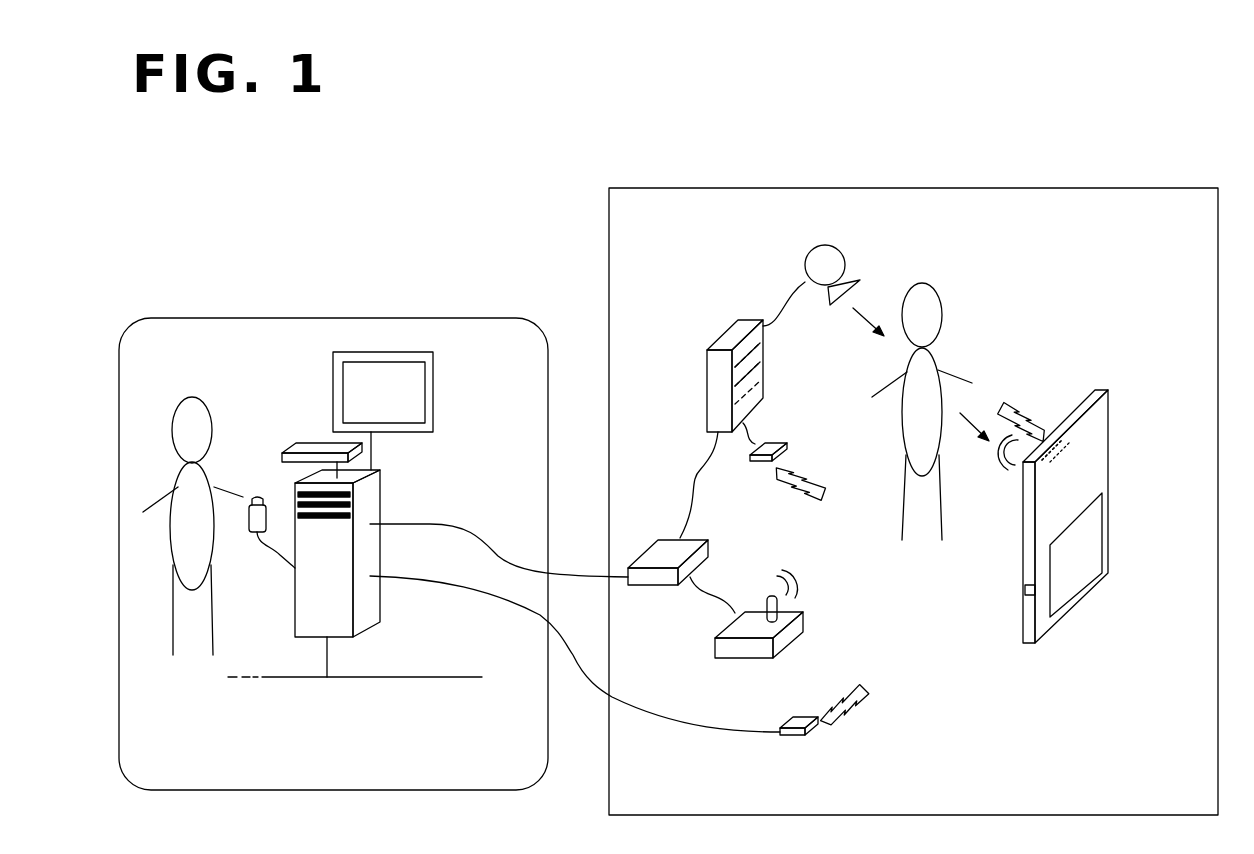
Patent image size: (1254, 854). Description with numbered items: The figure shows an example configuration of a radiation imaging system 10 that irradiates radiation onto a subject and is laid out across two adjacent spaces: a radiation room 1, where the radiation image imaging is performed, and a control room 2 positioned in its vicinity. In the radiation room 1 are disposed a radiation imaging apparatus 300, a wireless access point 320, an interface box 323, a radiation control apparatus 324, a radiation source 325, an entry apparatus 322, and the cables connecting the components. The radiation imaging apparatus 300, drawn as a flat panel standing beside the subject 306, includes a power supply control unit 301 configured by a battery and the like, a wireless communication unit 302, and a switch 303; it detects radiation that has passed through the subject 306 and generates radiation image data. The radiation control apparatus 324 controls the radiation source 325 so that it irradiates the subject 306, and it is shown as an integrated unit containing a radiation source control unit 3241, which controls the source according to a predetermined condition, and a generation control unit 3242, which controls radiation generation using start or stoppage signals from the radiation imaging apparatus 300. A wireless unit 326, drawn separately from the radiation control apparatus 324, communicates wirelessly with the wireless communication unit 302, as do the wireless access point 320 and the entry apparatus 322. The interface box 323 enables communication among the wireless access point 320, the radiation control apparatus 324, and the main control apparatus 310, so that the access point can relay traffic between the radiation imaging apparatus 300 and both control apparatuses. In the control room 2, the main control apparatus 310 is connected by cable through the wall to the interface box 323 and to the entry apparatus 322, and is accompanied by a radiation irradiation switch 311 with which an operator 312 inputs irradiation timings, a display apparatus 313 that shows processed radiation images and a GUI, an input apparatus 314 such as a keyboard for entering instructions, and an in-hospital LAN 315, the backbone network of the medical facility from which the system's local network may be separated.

The radiation room 1 is at (1063, 188).
The control room 2 is at (470, 318).
The radiation imaging system 10 is at (503, 140).
The radiation imaging apparatus 300 is at (1110, 443).
The power supply control unit 301 is at (1087, 545).
The wireless communication unit 302 is at (1017, 483).
The switch 303 is at (1023, 588).
The subject 306 is at (933, 283).
The main control apparatus 310 is at (380, 498).
The radiation irradiation switch 311 is at (257, 497).
The operator 312 is at (192, 397).
The display apparatus 313 is at (433, 390).
The input apparatus 314 is at (303, 443).
The in-hospital LAN 315 is at (432, 677).
The wireless access point 320 is at (805, 617).
The entry apparatus 322 is at (813, 728).
The interface box 323 is at (665, 538).
The radiation control apparatus 324 is at (718, 335).
The radiation source control unit 3241 is at (763, 345).
The generation control unit 3242 is at (763, 382).
The radiation source 325 is at (810, 245).
The wireless unit 326 is at (753, 463).